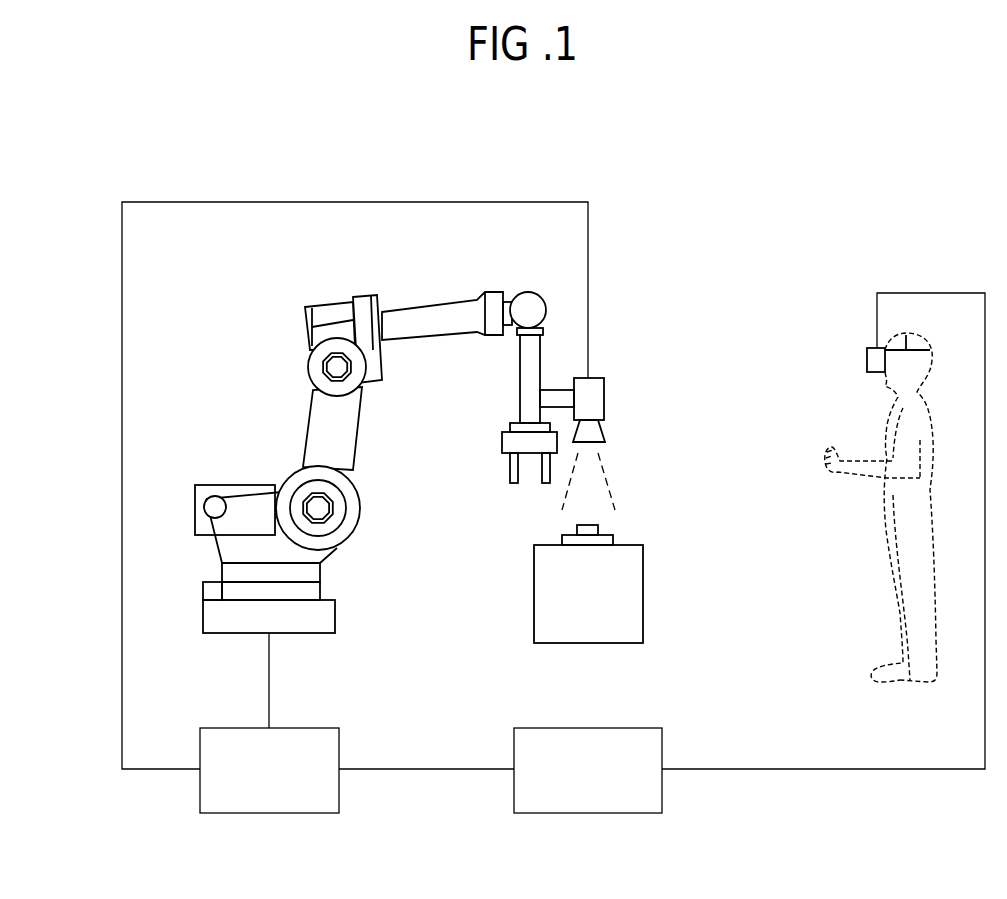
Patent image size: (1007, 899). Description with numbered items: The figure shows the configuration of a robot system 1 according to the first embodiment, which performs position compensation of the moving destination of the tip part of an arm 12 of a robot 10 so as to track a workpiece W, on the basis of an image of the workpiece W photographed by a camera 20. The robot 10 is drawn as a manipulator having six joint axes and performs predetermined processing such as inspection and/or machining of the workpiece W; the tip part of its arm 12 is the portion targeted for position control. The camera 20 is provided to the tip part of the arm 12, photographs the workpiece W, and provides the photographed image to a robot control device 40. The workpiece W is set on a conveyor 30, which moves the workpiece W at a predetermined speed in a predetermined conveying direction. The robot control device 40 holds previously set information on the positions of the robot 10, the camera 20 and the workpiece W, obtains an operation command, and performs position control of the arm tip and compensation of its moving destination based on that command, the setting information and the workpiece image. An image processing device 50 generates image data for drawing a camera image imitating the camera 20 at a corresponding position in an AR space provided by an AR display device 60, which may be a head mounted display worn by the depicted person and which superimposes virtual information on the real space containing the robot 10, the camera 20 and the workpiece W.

The robot system 1 is at (927, 129).
The robot 10 is at (248, 485).
The arm 12 is at (517, 397).
The camera 20 is at (604, 402).
The conveyor 30 is at (643, 600).
The workpiece W is at (598, 529).
The robot control device 40 is at (269, 813).
The image processing device 50 is at (588, 813).
The AR display device 60 is at (875, 348).